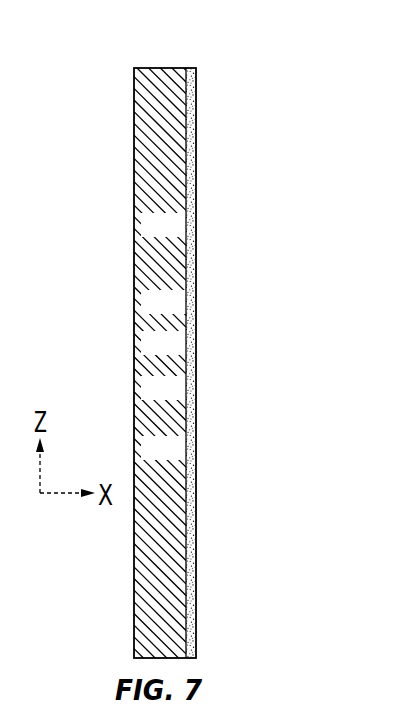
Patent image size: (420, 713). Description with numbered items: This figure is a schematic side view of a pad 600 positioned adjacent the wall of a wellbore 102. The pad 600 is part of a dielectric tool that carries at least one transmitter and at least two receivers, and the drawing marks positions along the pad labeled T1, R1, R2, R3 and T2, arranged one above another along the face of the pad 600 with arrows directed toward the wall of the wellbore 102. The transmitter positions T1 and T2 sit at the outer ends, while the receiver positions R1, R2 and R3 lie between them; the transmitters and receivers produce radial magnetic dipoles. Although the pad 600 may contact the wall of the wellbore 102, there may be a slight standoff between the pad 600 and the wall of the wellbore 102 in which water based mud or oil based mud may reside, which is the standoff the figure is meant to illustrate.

The pad 600 is at (160, 67).
The wellbore 102 is at (196, 530).
The transmitter T2 is at (216, 221).
The receiver R3 is at (216, 298).
The receiver R2 is at (216, 339).
The receiver R1 is at (216, 384).
The transmitter T1 is at (216, 444).